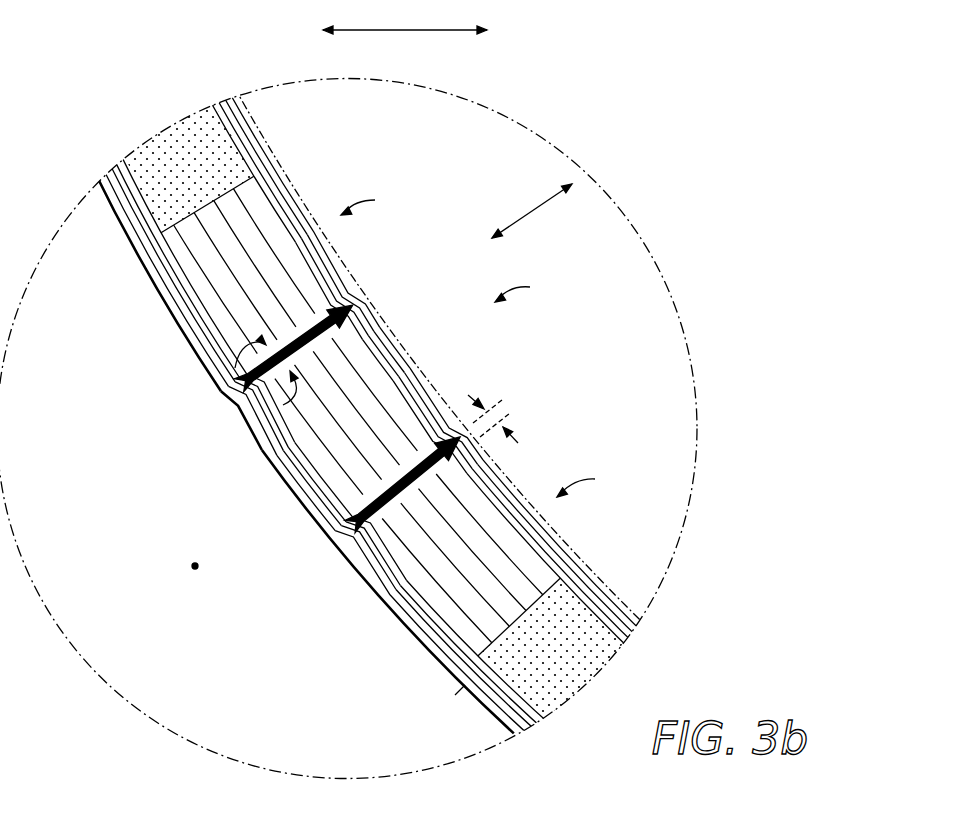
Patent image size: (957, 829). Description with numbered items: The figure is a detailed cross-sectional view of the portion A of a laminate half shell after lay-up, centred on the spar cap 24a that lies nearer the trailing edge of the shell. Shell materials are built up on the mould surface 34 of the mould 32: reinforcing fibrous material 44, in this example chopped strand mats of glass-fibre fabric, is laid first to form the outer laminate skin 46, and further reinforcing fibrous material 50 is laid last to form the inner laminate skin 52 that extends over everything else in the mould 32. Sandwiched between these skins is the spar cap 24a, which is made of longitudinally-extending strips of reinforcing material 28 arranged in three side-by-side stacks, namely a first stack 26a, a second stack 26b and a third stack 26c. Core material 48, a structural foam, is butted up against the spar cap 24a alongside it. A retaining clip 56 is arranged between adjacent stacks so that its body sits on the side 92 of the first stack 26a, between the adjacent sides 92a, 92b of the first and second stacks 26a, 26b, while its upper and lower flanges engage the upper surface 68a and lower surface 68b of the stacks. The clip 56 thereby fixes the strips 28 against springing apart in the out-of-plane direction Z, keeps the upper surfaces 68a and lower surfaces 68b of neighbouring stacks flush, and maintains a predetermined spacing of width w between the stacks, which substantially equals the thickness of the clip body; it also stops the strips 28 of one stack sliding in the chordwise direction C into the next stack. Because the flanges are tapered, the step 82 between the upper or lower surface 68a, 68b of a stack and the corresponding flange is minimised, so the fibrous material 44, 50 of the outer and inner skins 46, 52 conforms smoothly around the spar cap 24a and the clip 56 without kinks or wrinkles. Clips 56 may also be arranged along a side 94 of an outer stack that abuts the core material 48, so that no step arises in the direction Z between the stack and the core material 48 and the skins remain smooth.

The spar cap 24a is at (195, 570).
The first stack 26a is at (380, 201).
The second stack 26b is at (535, 288).
The third stack 26c is at (598, 483).
The strips of reinforcing material 28 is at (187, 258).
The mould 32 is at (197, 701).
The mould surface 34 is at (465, 685).
The reinforcing fibrous material 44 is at (128, 210).
The outer laminate skin 46 is at (135, 252).
The core material 48 is at (214, 172).
The further reinforcing fibrous material 50 is at (250, 137).
The inner laminate skin 52 is at (288, 172).
The retaining clip 56 is at (233, 397).
The upper surface 68a is at (330, 272).
The lower surface 68b is at (200, 338).
The step 82 is at (378, 328).
The side of the first stack 92 is at (432, 415).
The adjacent side of the first stack 92a is at (235, 368).
The adjacent side of the second stack 92b is at (283, 405).
The side of a stack 94 is at (195, 210).
The portion A is at (651, 179).
The chordwise direction C is at (405, 45).
The out-of-plane direction Z is at (532, 213).
The width of spacing w is at (501, 427).